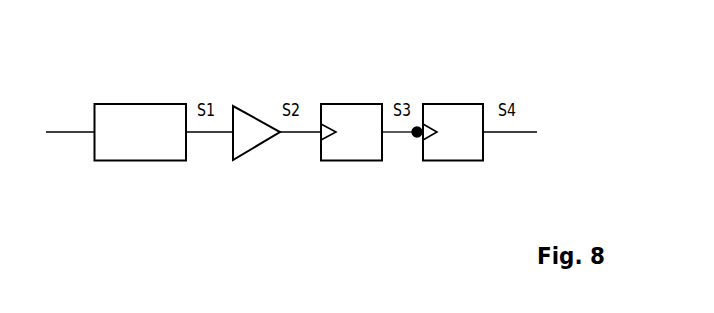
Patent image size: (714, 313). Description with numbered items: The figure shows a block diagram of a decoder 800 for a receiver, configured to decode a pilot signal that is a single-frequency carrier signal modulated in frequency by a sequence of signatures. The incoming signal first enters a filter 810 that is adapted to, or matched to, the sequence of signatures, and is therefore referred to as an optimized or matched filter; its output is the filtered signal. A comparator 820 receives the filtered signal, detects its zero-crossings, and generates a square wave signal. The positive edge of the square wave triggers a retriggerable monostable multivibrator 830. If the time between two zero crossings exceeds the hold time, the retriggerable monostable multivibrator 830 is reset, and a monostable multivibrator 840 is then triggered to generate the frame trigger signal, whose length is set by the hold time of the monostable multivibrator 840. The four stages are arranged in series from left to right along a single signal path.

The decoder 800 is at (422, 60).
The filter 810 is at (142, 162).
The comparator 820 is at (260, 163).
The retriggerable monostable multivibrator 830 is at (357, 168).
The monostable multivibrator 840 is at (455, 168).